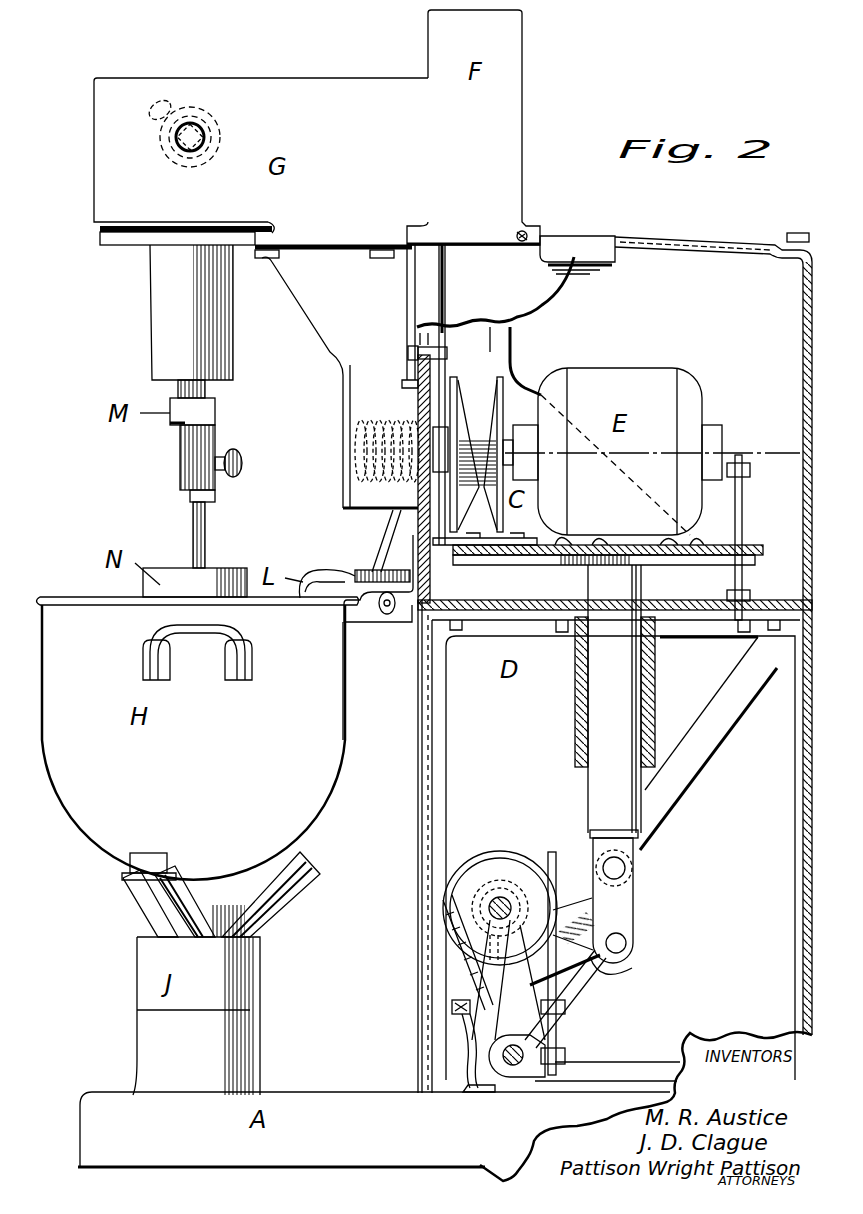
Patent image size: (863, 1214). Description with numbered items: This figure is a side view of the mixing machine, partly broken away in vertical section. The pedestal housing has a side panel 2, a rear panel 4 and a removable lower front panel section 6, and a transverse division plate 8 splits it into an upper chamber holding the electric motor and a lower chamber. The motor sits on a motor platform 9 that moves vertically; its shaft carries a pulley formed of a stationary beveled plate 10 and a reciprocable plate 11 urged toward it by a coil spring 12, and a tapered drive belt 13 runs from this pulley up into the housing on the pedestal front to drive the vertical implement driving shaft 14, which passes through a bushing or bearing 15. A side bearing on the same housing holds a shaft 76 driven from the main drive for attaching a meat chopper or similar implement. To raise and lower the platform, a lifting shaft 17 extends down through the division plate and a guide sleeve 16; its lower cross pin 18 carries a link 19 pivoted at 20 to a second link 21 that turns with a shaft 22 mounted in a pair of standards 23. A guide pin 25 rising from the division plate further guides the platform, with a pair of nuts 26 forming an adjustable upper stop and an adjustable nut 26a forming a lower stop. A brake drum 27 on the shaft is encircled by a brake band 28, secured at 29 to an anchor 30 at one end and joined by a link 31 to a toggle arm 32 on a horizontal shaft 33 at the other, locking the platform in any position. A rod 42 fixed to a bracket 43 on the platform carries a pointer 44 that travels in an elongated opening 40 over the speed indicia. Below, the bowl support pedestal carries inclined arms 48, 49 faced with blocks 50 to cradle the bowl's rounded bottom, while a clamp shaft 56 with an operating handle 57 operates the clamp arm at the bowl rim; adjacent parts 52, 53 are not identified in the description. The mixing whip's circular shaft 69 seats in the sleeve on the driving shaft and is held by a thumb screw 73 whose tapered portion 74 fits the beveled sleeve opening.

The side panel 2 is at (698, 241).
The rear panel 4 is at (128, 464).
The lower removable panel section 6 is at (418, 790).
The division plate 8 is at (508, 600).
The motor platform 9 is at (690, 570).
The innermost pulley plate 10 is at (505, 395).
The pulley plate 11 is at (462, 392).
The coil spring 12 is at (387, 437).
The drive belt 13 is at (502, 338).
The implement driving shaft 14 is at (190, 392).
The bushing or bearing 15 is at (165, 312).
The guide sleeve 16 is at (575, 710).
The lifting shaft 17 is at (615, 697).
The cross pin 18 is at (626, 867).
The link 19 is at (640, 895).
The pivotal connection 20 is at (628, 941).
The second link 21 is at (618, 977).
The shaft 22 is at (500, 900).
The standards 23 is at (520, 1040).
The guide pin 25 is at (742, 502).
The nuts 26 is at (750, 473).
The adjustable nut 26a is at (727, 594).
The brake drum 27 is at (445, 880).
The brake band 28 is at (452, 935).
The securing point 29 is at (452, 1007).
The anchor 30 is at (462, 1022).
The link 31 is at (560, 1022).
The toggle arm 32 is at (530, 1068).
The horizontally disposed shaft 33 is at (505, 1068).
The elongated opening 40 is at (446, 330).
The vertically disposed rod 42 is at (408, 354).
The bracket 43 is at (462, 565).
The pointer 44 is at (410, 352).
The arm 48 is at (138, 890).
The arm 49 is at (300, 903).
The block 50 is at (280, 868).
The block 52 is at (400, 572).
The bracket 53 is at (366, 615).
The shaft 56 is at (388, 614).
The operating handle 57 is at (392, 520).
The implement shaft 69 is at (195, 528).
The thumb screw 73 is at (236, 452).
The tapered cylindrical portion 74 is at (240, 470).
The shaft 76 is at (192, 122).